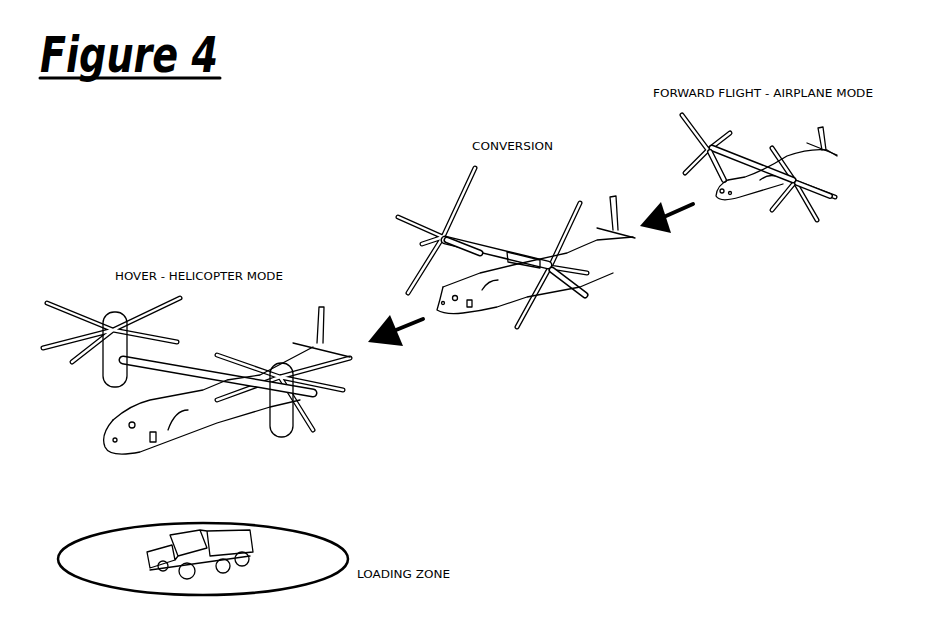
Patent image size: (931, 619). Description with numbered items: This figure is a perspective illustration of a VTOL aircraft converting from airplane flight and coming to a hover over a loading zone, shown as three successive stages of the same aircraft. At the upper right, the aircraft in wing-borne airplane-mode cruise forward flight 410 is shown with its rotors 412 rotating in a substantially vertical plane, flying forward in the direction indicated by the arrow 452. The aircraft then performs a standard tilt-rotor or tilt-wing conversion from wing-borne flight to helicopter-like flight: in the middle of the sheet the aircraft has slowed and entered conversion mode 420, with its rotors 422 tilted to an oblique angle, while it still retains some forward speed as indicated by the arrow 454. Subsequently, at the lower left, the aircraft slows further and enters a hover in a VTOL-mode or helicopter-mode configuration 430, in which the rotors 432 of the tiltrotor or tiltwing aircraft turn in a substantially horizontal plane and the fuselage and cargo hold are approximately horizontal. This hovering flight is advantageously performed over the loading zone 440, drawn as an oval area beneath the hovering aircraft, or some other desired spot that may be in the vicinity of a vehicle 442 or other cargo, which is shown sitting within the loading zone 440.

The aircraft in wing-borne airplane-mode cruise forward flight 410 is at (655, 116).
The rotors 412 is at (817, 223).
The conversion mode 420 is at (376, 216).
The rotors 422 is at (530, 310).
The VTOL-mode or helicopter-mode configuration 430 is at (102, 292).
The rotors 432 is at (340, 390).
The loading zone 440 is at (315, 532).
The vehicle 442 is at (162, 547).
The arrow 452 is at (683, 210).
The arrow 454 is at (410, 327).